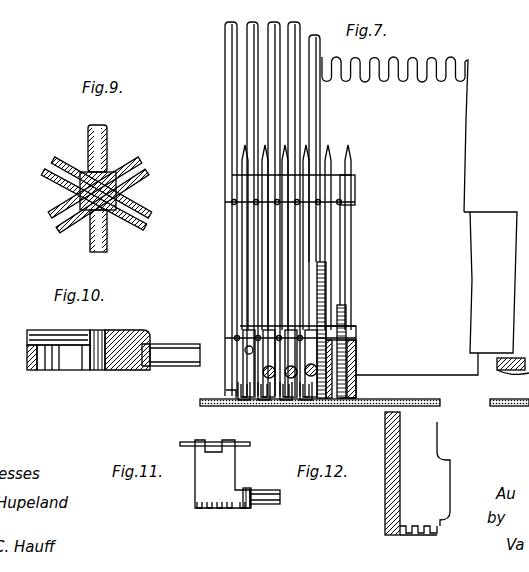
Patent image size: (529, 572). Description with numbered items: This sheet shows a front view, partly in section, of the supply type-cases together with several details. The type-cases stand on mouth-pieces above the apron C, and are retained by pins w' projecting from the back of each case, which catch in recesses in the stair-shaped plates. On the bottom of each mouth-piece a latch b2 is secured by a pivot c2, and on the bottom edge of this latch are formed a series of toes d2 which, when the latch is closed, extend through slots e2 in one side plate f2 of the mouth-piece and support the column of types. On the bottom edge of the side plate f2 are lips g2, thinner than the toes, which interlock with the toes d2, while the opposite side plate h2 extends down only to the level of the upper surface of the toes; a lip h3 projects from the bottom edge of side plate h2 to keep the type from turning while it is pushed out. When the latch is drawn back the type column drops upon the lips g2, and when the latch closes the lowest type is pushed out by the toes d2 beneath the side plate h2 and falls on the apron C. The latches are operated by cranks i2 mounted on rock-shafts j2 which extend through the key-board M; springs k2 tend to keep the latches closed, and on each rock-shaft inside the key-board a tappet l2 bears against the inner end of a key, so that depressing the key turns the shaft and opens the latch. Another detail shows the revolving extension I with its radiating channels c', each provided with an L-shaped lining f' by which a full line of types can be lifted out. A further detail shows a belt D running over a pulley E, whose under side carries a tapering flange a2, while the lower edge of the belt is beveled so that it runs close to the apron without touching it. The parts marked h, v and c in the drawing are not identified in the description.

In FIG. 7, the vertical rods h is at (314, 88).
In FIG. 7, the pointed slide bars v is at (292, 237).
In FIG. 7, the key-board M is at (284, 232).
In FIG. 7, the crank i2 is at (318, 262).
In FIG. 7, the spring k2 is at (340, 264).
In FIG. 7, the side plate f2 is at (342, 300).
In FIG. 12, the side plate f2 is at (410, 474).
In FIG. 7, the pivot c2 is at (352, 334).
In FIG. 7, the latch b2 is at (350, 369).
In FIG. 11, the latch b2 is at (222, 474).
In FIG. 7, the side plate h2 is at (241, 306).
In FIG. 7, the tappet l2 is at (302, 344).
In FIG. 7, the slot e2 is at (275, 389).
In FIG. 12, the slot e2 is at (418, 522).
In FIG. 7, the lip h3 is at (325, 404).
In FIG. 7, the lip g2 is at (348, 404).
In FIG. 12, the lip g2 is at (411, 533).
In FIG. 7, the toe d2 is at (355, 404).
In FIG. 11, the toe d2 is at (238, 498).
In FIG. 7, the apron C is at (364, 393).
In FIG. 7, the pin w' is at (400, 216).
In FIG. 7, the revolving extension I is at (490, 282).
In FIG. 9, the revolving extension I is at (112, 191).
In FIG. 7, the rock-shaft j2 is at (512, 360).
In FIG. 9, the L-shaped lining f' is at (88, 177).
In FIG. 9, the radiating channel c' is at (100, 189).
In FIG. 9, the shaft c is at (98, 237).
In FIG. 10, the belt D is at (108, 357).
In FIG. 10, the pulley E is at (78, 364).
In FIG. 10, the tapering flange a2 is at (155, 355).
In FIG. 11, the tapering flange a2 is at (254, 448).